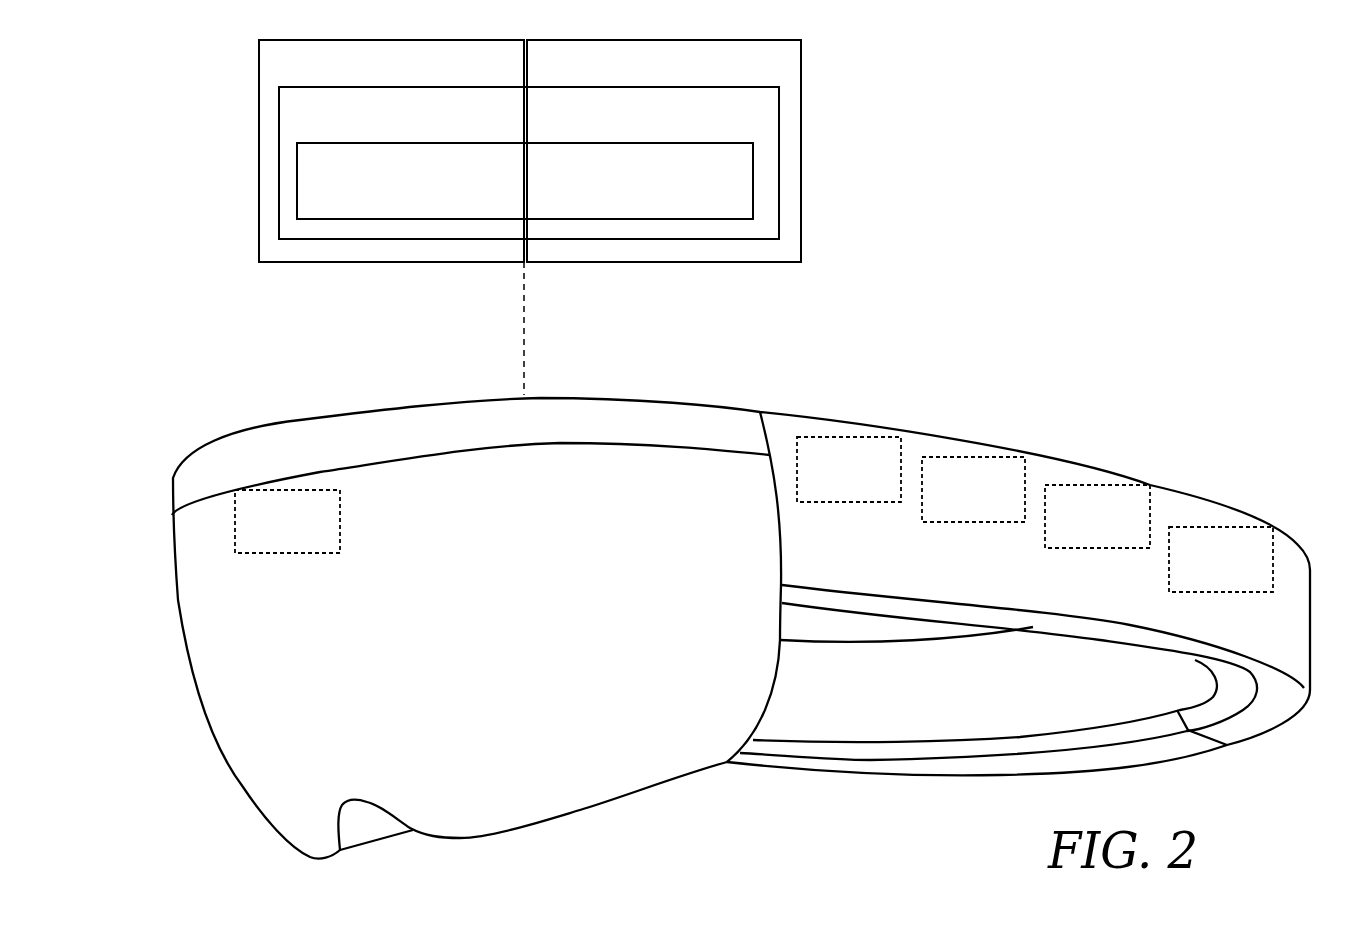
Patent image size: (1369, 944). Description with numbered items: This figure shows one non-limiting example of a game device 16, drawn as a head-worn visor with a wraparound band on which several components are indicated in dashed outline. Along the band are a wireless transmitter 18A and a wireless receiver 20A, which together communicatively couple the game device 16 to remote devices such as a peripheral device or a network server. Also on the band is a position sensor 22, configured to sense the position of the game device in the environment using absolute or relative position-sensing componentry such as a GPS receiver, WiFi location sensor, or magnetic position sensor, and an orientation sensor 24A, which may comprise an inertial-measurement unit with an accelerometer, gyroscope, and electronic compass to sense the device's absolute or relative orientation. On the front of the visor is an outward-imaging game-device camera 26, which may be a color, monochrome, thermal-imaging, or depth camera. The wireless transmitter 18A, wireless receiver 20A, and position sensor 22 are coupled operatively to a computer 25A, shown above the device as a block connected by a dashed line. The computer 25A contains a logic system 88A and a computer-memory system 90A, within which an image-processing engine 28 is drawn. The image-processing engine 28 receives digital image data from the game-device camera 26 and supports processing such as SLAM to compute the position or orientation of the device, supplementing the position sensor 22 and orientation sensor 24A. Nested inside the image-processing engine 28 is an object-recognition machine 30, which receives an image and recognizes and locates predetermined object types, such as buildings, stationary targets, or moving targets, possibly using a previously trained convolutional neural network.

The game device 16 is at (1228, 396).
The wireless transmitter 18A is at (1243, 570).
The wireless receiver 20A is at (1118, 528).
The position sensor 22 is at (985, 503).
The orientation sensor 24A is at (870, 480).
The computer 25A is at (196, 270).
The game-device camera 26 is at (302, 535).
The image-processing engine 28 is at (701, 121).
The object-recognition machine 30 is at (721, 193).
The logic system 88A is at (448, 73).
The computer-memory system 90A is at (738, 73).